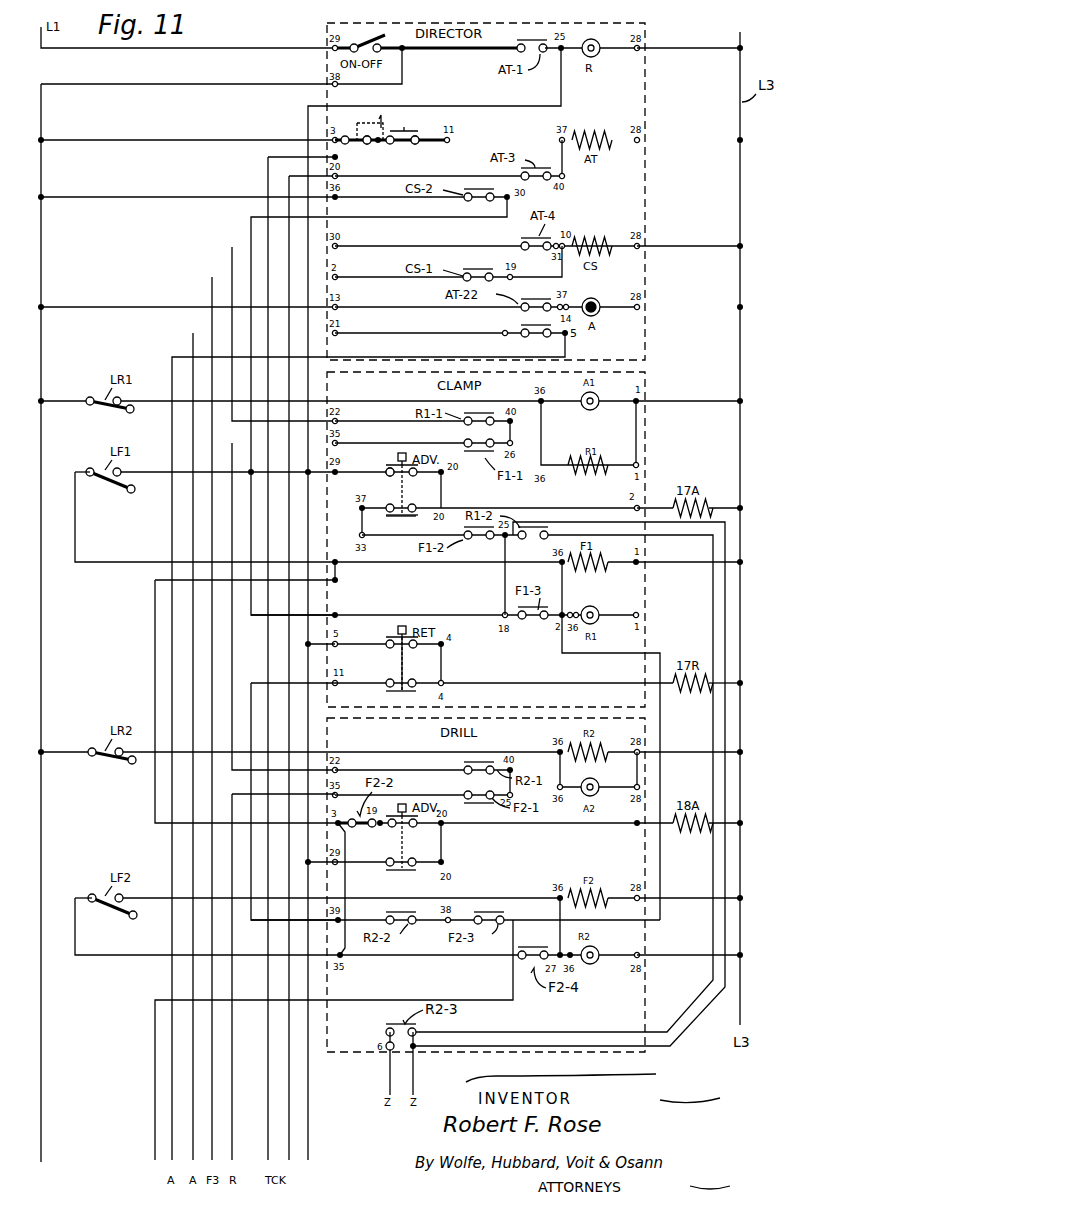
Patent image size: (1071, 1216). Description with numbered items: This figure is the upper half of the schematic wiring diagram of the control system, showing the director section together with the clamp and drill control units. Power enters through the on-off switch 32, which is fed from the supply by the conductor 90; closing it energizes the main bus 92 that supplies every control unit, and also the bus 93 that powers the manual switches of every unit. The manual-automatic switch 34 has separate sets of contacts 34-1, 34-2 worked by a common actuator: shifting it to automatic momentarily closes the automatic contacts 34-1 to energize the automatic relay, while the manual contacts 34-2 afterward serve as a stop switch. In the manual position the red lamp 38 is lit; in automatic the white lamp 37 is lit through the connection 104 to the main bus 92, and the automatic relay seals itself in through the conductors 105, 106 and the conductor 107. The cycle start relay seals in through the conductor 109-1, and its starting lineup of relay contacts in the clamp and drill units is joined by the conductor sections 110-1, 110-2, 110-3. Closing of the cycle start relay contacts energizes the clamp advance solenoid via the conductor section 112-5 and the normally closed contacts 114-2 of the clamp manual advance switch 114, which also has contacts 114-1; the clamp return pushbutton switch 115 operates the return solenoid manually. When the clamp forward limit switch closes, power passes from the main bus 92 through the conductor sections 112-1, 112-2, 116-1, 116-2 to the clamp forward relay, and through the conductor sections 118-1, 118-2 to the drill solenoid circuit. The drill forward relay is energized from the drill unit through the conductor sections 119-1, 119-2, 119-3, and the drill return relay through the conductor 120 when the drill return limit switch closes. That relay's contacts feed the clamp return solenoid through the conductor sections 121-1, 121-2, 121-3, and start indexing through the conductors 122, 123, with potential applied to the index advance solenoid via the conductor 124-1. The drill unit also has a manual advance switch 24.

The manual switch 24 is at (405, 804).
The on-off switch 32 is at (359, 33).
The manual-automatic switch 34 is at (392, 108).
The automatic contacts 34-1 is at (406, 146).
The manual switch contacts 34-2 is at (373, 154).
The white lamp 37 is at (592, 298).
The red lamp 38 is at (600, 56).
The conductor 90 is at (278, 42).
The main bus 92 is at (41, 129).
The bus 93 is at (306, 122).
The connection 104 is at (124, 303).
The conductor 105 is at (268, 165).
The conductor 106 is at (286, 186).
The conductor 107 is at (147, 141).
The conductor 109-1 is at (212, 280).
The conductor section 110-1 is at (232, 256).
The conductor section 110-2 is at (234, 636).
The conductor section 110-3 is at (234, 1068).
The conductor section 112-1 is at (149, 198).
The conductor section 112-2 is at (251, 226).
The conductor section 112-5 is at (578, 508).
The manual switch 114 is at (380, 463).
The switch contacts 114-1 is at (400, 482).
The normally closed contacts 114-2 is at (436, 499).
The pushbutton switch 115 is at (393, 638).
The conductor section 116-1 is at (159, 472).
The conductor section 116-2 is at (112, 569).
The conductor section 118-1 is at (339, 581).
The conductor section 118-2 is at (155, 694).
The conductor section 119-1 is at (351, 877).
The conductor section 119-2 is at (144, 964).
The conductor section 119-3 is at (538, 898).
The conductor 120 is at (155, 772).
The conductor section 121-1 is at (527, 684).
The conductor section 121-2 is at (256, 920).
The conductor section 121-3 is at (560, 653).
The conductor 122 is at (422, 1082).
The conductor 123 is at (388, 1082).
The conductor 124-1 is at (155, 1091).